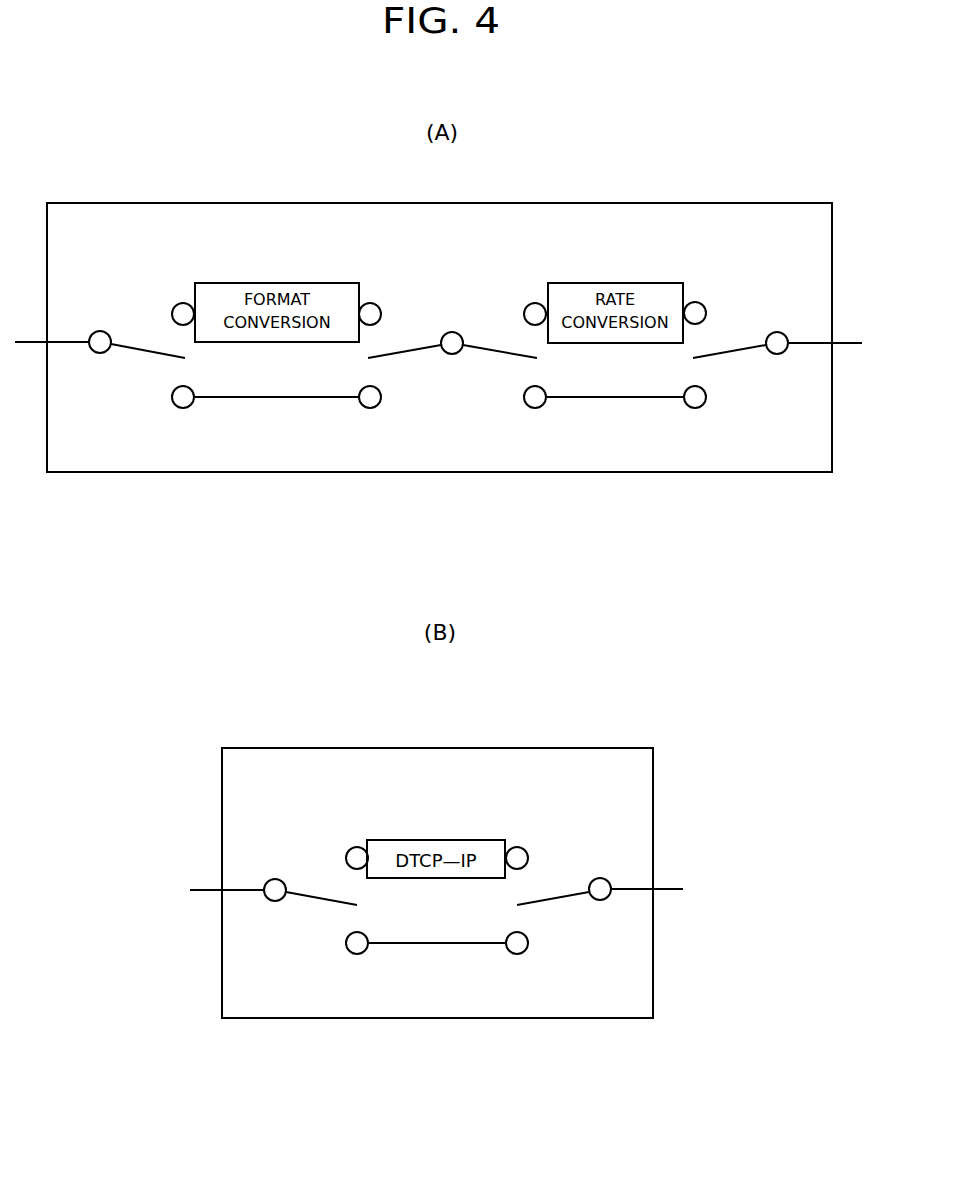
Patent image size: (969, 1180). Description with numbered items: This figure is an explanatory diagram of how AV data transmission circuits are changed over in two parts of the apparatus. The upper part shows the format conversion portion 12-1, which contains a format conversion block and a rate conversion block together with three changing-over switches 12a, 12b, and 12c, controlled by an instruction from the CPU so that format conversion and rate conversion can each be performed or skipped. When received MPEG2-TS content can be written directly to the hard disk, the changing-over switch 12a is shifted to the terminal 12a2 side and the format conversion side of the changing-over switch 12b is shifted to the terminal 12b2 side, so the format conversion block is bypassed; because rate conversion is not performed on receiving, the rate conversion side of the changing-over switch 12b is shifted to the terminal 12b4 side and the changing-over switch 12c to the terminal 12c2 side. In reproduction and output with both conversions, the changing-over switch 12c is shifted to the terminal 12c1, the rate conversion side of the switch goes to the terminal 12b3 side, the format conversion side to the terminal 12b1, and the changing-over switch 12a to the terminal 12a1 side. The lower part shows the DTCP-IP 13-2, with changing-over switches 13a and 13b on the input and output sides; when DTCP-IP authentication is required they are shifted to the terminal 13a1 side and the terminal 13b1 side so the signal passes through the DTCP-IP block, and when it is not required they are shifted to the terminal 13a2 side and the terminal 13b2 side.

The format conversion portion 12-1 is at (712, 203).
The changing-over switch 12a is at (97, 330).
The terminal 12a1 is at (182, 302).
The terminal 12a2 is at (185, 408).
The changing-over switch 12b is at (451, 332).
The terminal 12b1 is at (372, 302).
The terminal 12b2 is at (372, 408).
The terminal 12b3 is at (534, 302).
The terminal 12b4 is at (538, 408).
The changing-over switch 12c is at (777, 332).
The terminal 12c1 is at (698, 301).
The terminal 12c2 is at (697, 408).
The DTCP-IP 13-2 is at (582, 748).
The changing-over switch 13a is at (272, 878).
The terminal 13a1 is at (355, 846).
The terminal 13a2 is at (360, 954).
The changing-over switch 13b is at (600, 878).
The terminal 13b1 is at (519, 846).
The terminal 13b2 is at (520, 954).